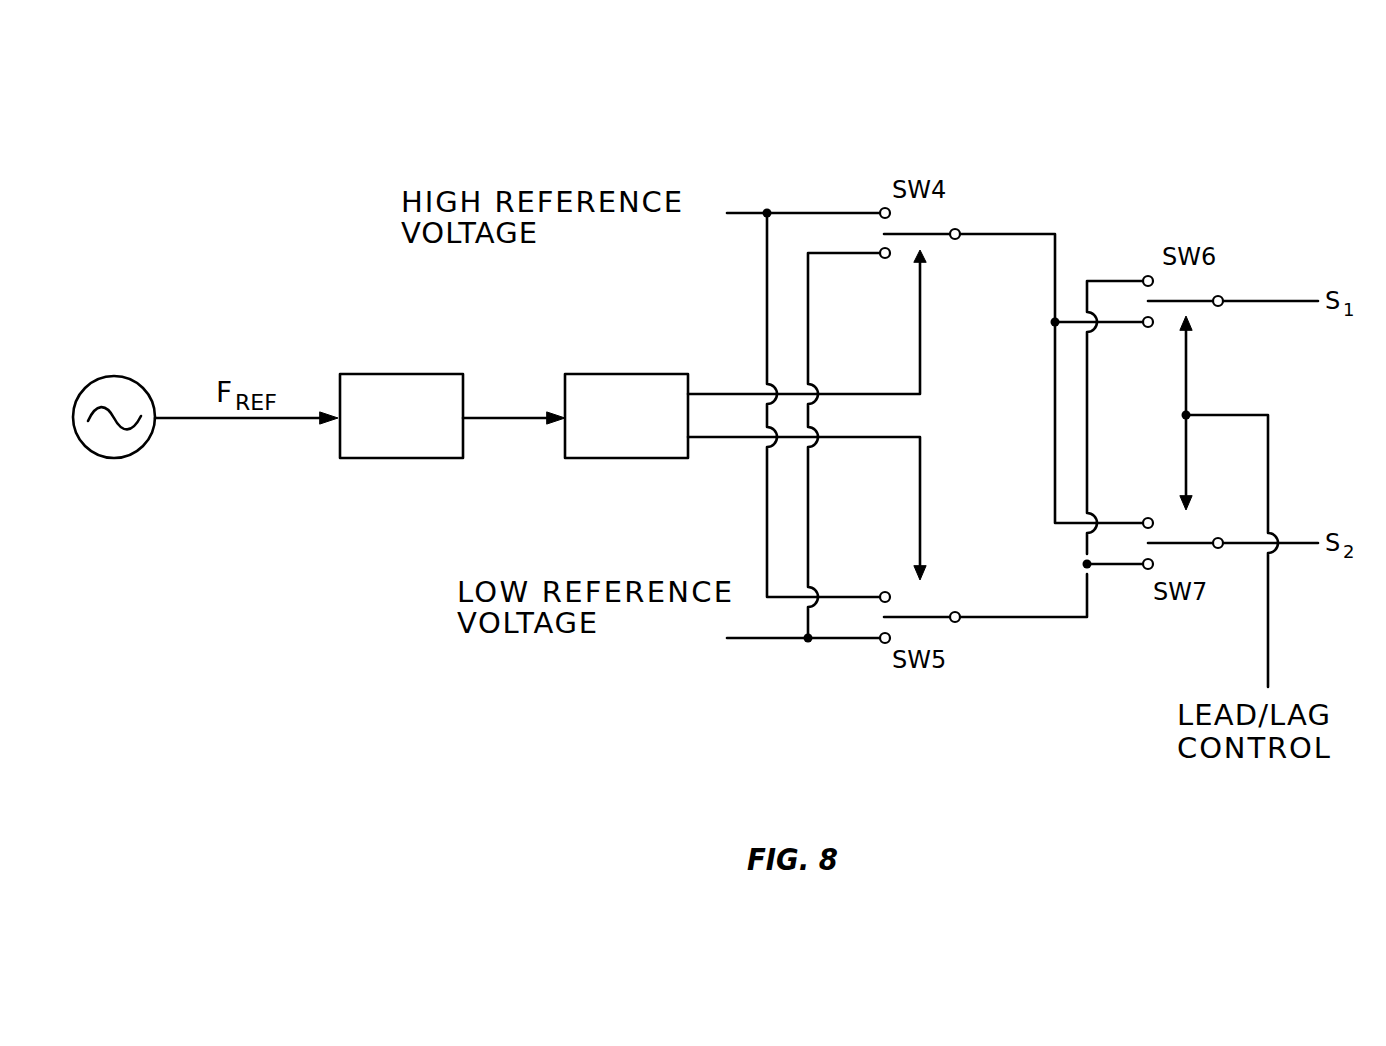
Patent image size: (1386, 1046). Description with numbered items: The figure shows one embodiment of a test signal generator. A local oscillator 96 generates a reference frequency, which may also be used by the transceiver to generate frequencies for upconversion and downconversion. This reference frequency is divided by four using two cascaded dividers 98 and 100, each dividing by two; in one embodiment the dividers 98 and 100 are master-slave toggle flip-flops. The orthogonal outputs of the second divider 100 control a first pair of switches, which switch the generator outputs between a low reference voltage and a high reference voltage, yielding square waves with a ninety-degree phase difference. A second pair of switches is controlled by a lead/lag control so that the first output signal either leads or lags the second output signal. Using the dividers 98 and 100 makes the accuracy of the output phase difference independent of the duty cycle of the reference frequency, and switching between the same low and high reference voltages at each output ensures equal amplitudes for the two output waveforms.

The local oscillator 96 is at (141, 379).
The first divider 98 is at (445, 374).
The second divider 100 is at (667, 374).